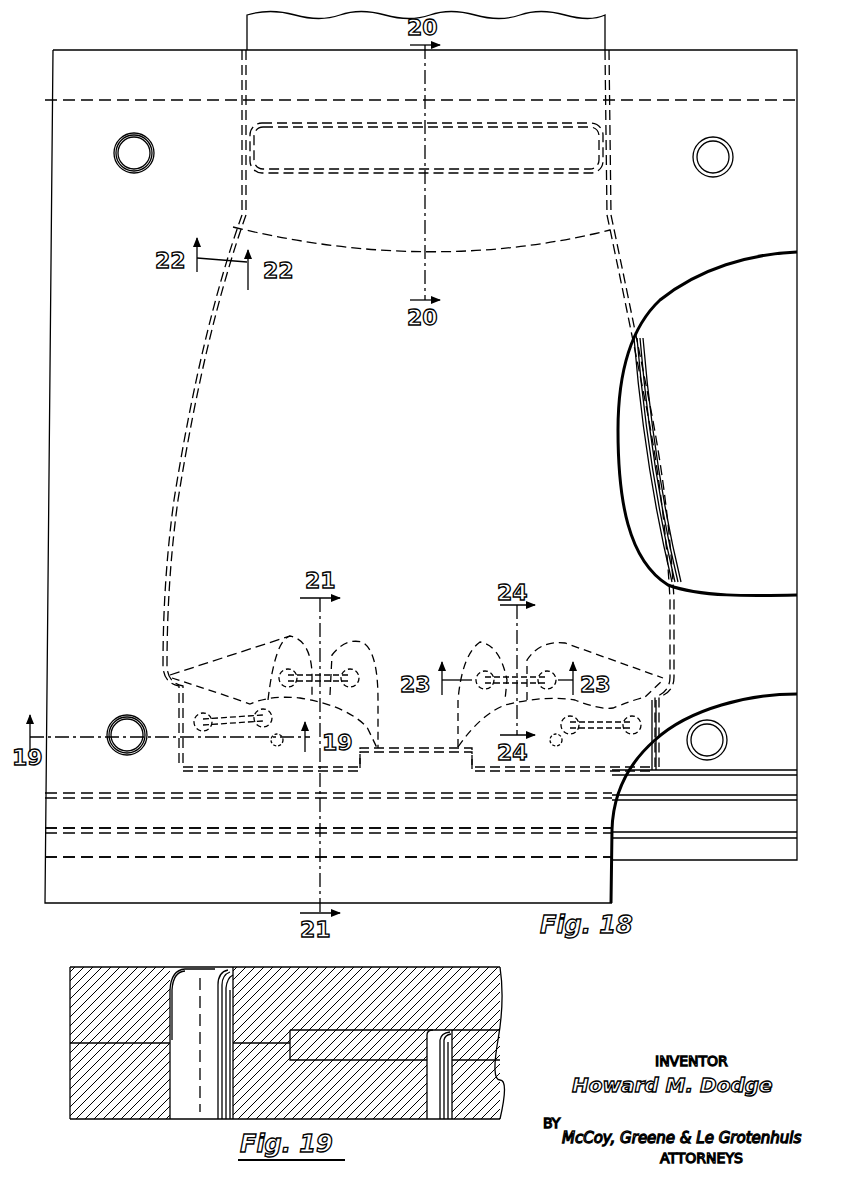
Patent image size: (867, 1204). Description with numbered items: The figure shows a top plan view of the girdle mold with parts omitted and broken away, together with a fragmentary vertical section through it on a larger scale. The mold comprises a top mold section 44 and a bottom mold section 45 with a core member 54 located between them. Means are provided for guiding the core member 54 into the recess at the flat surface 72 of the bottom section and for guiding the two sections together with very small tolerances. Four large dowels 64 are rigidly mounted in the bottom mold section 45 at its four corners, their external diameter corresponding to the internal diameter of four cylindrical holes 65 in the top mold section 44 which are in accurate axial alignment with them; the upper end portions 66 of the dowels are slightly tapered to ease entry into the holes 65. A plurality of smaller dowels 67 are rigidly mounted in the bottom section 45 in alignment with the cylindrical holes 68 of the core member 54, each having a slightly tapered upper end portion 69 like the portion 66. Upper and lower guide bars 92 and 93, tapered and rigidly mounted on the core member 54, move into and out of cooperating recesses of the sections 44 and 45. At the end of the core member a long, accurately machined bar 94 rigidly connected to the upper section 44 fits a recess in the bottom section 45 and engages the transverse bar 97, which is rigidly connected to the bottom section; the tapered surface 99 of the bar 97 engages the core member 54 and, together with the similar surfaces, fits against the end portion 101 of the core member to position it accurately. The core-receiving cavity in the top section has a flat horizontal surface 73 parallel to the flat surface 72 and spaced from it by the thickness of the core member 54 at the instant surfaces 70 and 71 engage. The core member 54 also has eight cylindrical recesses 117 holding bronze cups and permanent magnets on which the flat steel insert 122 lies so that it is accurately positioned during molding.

In FIG. 19, the top mold section 44 is at (385, 972).
In FIG. 18, the bottom mold section 45 is at (700, 850).
In FIG. 19, the bottom mold section 45 is at (372, 1110).
In FIG. 18, the core member 54 is at (640, 402).
In FIG. 19, the core member 54 is at (335, 1035).
In FIG. 18, the large dowels 64 is at (125, 165).
In FIG. 19, the large dowels 64 is at (188, 1108).
In FIG. 18, the cylindrical holes 65 is at (148, 162).
In FIG. 19, the cylindrical holes 65 is at (222, 975).
In FIG. 19, the upper end portions 66 is at (187, 982).
In FIG. 18, the smaller dowels 67 is at (275, 746).
In FIG. 19, the smaller dowels 67 is at (445, 1122).
In FIG. 19, the cylindrical holes 68 is at (452, 1032).
In FIG. 19, the upper end portion 69 is at (433, 1040).
In FIG. 18, the surface 70 is at (752, 547).
In FIG. 19, the surface 70 is at (95, 1043).
In FIG. 19, the surface 71 is at (95, 1050).
In FIG. 19, the flat surface 72 is at (497, 1060).
In FIG. 19, the flat horizontal surface 73 is at (500, 1040).
In FIG. 18, the upper guide bar 92 is at (426, 166).
In FIG. 18, the lower guide bar 93 is at (313, 152).
In FIG. 18, the long accurately machined bar 94 is at (443, 818).
In FIG. 18, the transverse bar 97 is at (690, 785).
In FIG. 18, the tapered surface 99 is at (768, 768).
In FIG. 18, the end portion 101 is at (297, 775).
In FIG. 18, the cylindrical recesses 117 is at (205, 713).
In FIG. 18, the steel insert 122 is at (410, 722).